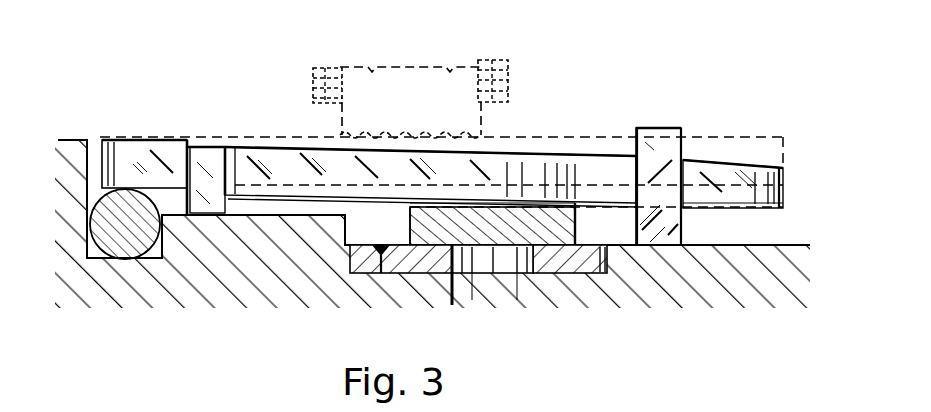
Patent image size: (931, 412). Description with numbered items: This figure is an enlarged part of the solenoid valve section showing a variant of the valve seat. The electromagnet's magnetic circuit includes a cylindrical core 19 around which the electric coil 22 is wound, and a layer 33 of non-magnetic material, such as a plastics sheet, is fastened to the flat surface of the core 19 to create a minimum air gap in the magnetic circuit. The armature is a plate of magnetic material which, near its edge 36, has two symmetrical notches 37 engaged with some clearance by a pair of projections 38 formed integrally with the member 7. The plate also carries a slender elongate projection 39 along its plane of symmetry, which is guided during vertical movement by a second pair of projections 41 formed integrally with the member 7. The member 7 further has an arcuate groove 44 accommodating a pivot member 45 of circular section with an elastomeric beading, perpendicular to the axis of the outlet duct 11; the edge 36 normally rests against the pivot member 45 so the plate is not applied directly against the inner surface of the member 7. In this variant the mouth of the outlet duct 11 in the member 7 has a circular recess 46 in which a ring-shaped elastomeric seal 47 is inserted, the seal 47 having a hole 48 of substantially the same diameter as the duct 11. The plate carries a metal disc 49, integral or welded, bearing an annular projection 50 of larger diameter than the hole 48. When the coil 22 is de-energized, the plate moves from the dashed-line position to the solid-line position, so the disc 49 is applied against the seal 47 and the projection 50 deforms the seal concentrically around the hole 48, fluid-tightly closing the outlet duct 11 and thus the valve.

The member 7 is at (787, 259).
The outlet duct 11 is at (533, 290).
The cylindrical core 19 is at (397, 83).
The electric coil 22 is at (315, 85).
The layer of non-magnetic material 33 is at (458, 133).
The edge 36 is at (149, 158).
The notches 37 is at (240, 165).
The projections 38 is at (205, 176).
The slender projection 39 is at (711, 178).
The second pair of projections 41 is at (658, 140).
The arcuate groove 44 is at (163, 235).
The pivot member 45 is at (122, 238).
The circular recess 46 is at (605, 258).
The ring-shaped seal 47 is at (381, 272).
The hole 48 is at (473, 260).
The metal disc 49 is at (410, 222).
The annular projection 50 is at (443, 248).